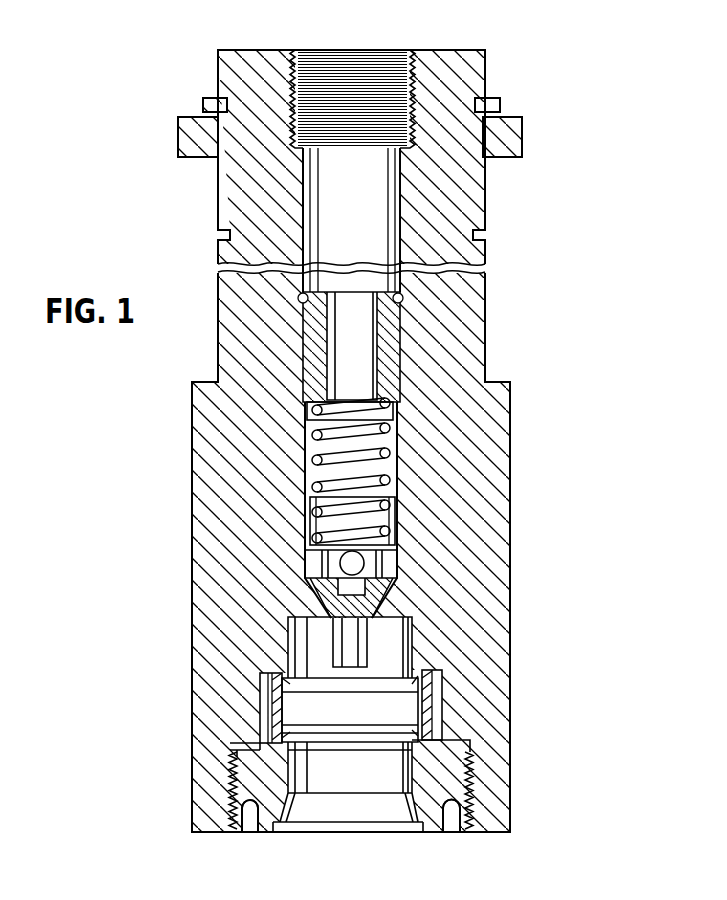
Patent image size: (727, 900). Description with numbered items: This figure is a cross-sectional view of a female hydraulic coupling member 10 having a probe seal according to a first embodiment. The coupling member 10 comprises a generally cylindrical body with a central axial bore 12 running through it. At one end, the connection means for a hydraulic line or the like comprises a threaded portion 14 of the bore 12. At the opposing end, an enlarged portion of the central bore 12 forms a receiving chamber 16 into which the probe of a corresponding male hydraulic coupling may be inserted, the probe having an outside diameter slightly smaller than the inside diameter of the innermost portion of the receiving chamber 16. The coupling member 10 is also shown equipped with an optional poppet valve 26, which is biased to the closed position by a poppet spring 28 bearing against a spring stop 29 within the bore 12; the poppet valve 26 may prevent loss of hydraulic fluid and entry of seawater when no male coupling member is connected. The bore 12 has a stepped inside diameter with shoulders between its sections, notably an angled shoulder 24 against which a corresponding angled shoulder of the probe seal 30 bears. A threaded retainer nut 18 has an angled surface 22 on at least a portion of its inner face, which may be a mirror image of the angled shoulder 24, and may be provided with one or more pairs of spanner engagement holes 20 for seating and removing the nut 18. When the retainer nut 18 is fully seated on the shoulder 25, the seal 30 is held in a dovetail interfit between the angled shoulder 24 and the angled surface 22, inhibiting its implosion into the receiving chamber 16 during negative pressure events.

The female hydraulic coupling member 10 is at (522, 202).
The central axial bore 12 is at (364, 223).
The threaded portion 14 is at (373, 58).
The receiving chamber 16 is at (364, 781).
The threaded retainer nut 18 is at (468, 790).
The spanner engagement holes 20 is at (253, 825).
The angled surface 22 is at (277, 750).
The angled shoulder 24 is at (270, 676).
The shoulder 25 is at (233, 760).
The poppet valve 26 is at (383, 607).
The poppet spring 28 is at (390, 457).
The spring stop 29 is at (388, 340).
The probe seal 30 is at (430, 722).